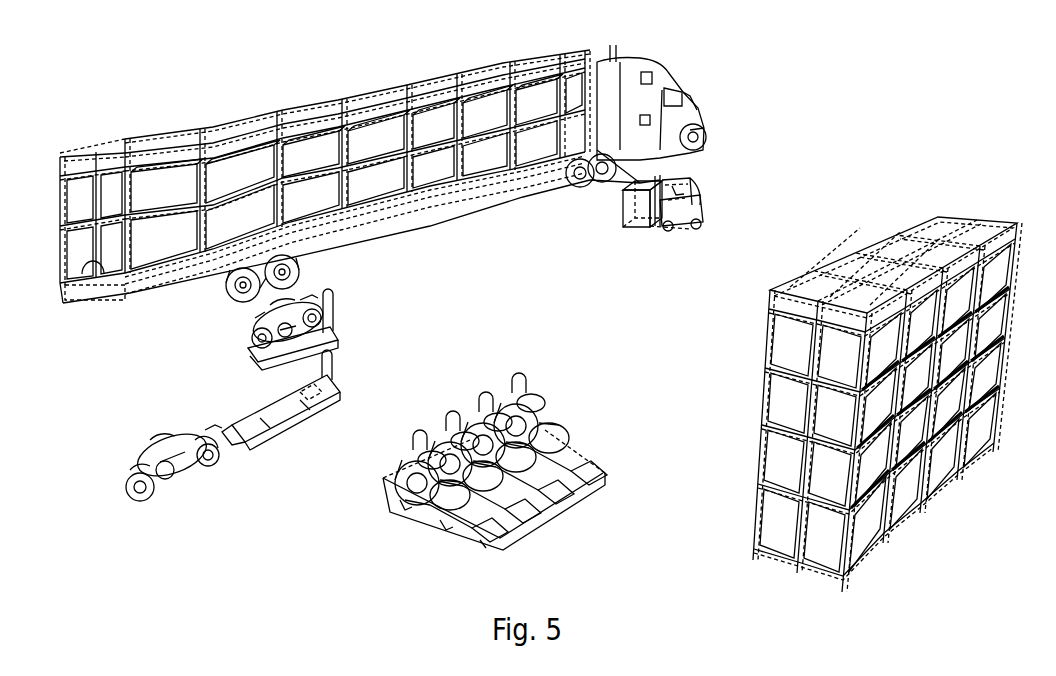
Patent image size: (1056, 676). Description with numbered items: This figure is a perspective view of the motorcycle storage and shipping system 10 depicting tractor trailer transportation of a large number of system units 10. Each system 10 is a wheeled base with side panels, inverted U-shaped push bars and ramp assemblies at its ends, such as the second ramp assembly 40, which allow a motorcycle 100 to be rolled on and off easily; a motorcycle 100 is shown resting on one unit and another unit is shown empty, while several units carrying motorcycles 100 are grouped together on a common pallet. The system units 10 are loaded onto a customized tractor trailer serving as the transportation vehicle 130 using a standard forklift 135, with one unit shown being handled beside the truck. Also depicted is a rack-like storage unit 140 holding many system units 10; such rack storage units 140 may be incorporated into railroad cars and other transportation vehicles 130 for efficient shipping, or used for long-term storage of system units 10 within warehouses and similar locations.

The system 10 is at (380, 92).
The second ramp assembly 40 is at (83, 263).
The motorcycle 100 is at (183, 420).
The transportation vehicle 130 is at (657, 72).
The forklift 135 is at (700, 218).
The rack-like storage unit 140 is at (900, 233).